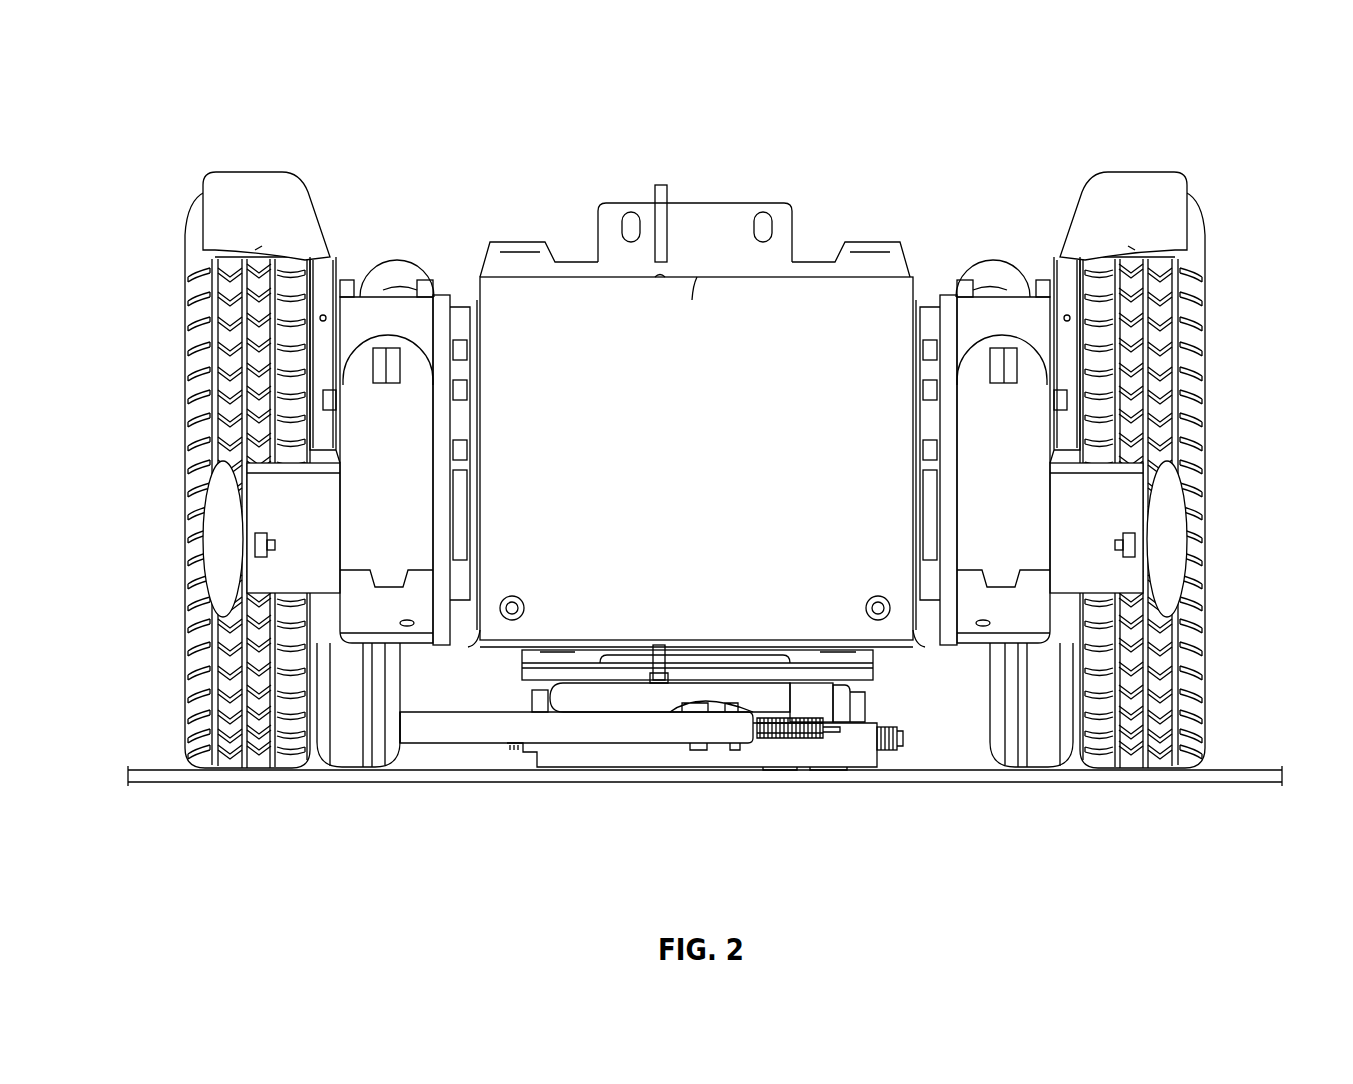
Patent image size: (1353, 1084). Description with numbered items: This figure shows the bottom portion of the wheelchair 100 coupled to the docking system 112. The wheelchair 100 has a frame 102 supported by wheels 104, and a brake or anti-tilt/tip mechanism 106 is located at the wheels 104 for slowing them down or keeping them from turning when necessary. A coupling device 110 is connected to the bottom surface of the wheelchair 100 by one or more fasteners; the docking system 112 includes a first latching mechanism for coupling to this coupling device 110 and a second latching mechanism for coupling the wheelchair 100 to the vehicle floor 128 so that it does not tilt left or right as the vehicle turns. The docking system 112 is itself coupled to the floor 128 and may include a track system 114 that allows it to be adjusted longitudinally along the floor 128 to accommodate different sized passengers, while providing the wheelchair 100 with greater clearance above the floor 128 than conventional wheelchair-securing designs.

The wheelchair 100 is at (913, 158).
The frame 102 is at (480, 255).
The wheels 104 is at (195, 378).
The brake or anti-tilt/tip mechanism 106 is at (222, 523).
The coupling device 110 is at (880, 667).
The docking system 112 is at (895, 752).
The track system 114 is at (793, 770).
The floor 128 is at (1232, 768).